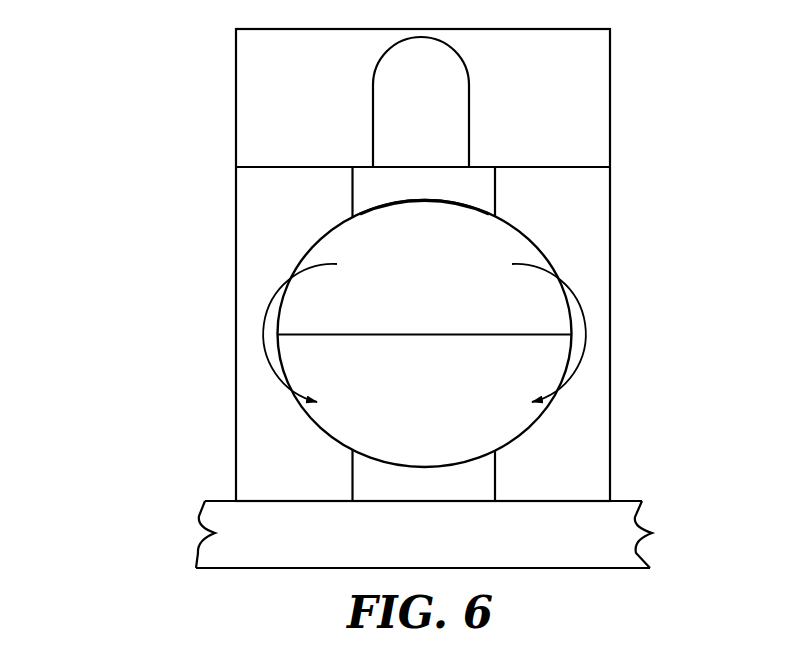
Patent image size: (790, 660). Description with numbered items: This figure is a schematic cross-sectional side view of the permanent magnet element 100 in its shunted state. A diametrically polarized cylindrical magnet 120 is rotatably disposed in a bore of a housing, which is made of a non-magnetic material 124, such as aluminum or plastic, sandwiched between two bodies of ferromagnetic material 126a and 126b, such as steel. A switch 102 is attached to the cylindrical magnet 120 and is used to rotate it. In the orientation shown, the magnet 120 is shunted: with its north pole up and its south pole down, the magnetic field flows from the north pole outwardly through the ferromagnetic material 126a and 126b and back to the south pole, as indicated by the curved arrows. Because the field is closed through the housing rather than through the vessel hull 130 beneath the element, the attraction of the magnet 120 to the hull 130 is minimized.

The permanent magnet element 100 is at (132, 186).
The switch 102 is at (442, 87).
The cylindrical magnet 120 is at (550, 298).
The non-magnetic material 124 is at (395, 188).
The ferromagnetic material 126a is at (583, 198).
The ferromagnetic material 126b is at (270, 220).
The vessel hull 130 is at (483, 547).